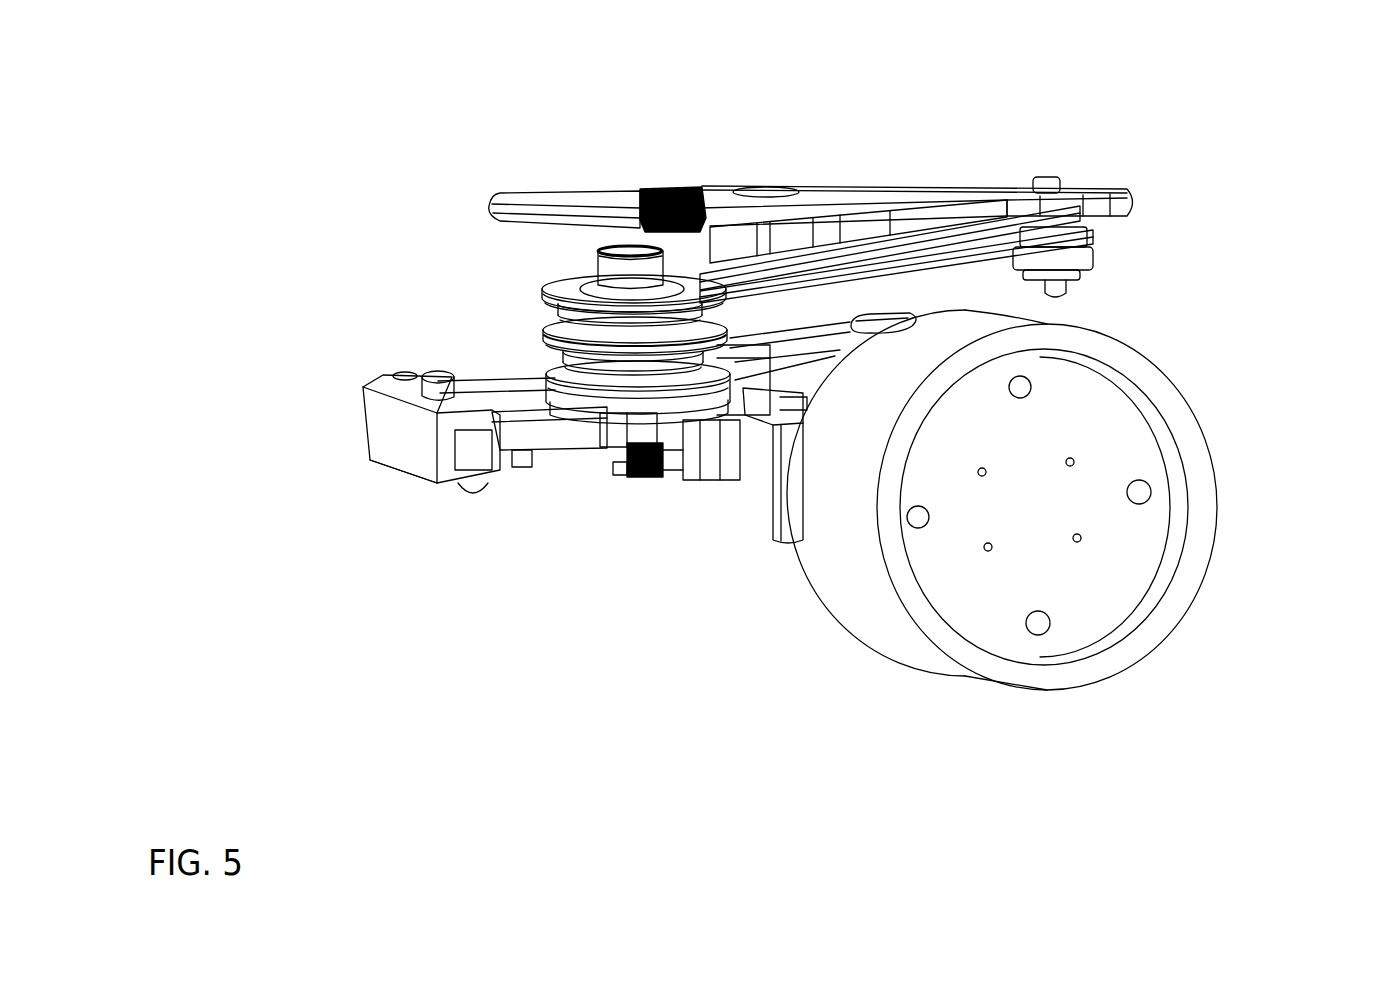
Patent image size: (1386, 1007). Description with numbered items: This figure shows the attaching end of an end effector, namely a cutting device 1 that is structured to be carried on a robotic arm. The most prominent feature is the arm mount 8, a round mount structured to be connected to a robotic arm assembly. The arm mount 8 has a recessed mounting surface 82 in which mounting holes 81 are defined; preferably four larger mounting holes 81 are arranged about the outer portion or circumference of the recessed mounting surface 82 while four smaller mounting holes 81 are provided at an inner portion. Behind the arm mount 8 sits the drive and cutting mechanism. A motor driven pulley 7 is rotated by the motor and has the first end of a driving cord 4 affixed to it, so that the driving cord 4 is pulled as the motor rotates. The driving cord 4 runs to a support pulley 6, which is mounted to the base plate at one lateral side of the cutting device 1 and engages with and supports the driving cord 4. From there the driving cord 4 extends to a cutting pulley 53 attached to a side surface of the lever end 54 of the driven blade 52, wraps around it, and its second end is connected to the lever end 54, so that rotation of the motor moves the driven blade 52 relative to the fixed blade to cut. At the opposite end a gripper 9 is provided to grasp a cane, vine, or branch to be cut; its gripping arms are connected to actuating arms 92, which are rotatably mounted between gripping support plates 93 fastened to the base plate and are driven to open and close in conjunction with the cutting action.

The cutting device 1 is at (378, 246).
The driving cord 4 is at (907, 267).
The support pulley 6 is at (617, 333).
The motor driven pulley 7 is at (893, 328).
The arm mount 8 is at (910, 647).
The mounting hole 81 is at (1139, 492).
The recessed mounting surface 82 is at (1097, 575).
The gripper 9 is at (393, 420).
The actuating arm 92 is at (557, 437).
The gripping support plate 93 is at (710, 483).
The driven blade 52 is at (573, 200).
The cutting pulley 53 is at (1095, 272).
The lever end 54 is at (983, 190).